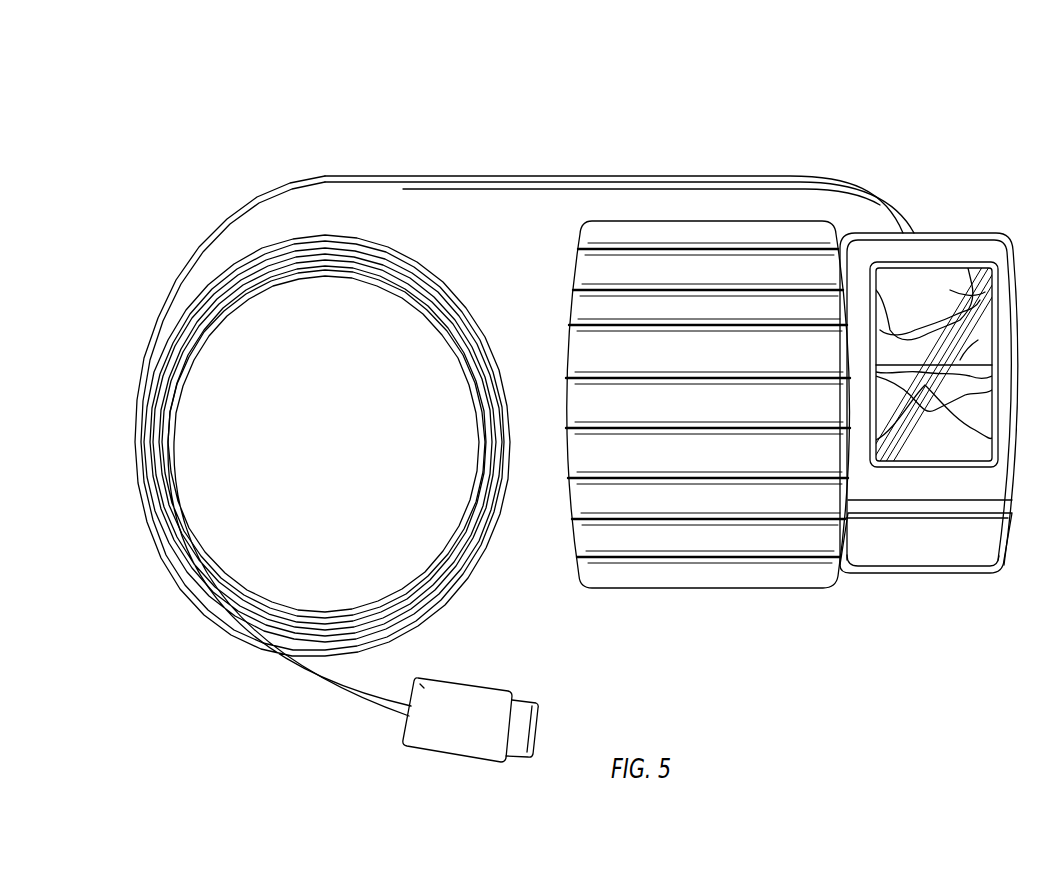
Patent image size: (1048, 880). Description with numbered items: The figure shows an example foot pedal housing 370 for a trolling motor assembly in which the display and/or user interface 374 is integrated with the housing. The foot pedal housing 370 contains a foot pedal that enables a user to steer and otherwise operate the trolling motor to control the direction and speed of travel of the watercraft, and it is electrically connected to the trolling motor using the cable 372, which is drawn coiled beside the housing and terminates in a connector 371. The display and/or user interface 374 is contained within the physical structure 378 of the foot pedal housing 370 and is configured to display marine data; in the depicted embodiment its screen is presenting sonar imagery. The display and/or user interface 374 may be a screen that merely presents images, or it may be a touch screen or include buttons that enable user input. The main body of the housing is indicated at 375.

The foot pedal housing 370 is at (576, 415).
The connector plug 371 is at (480, 736).
The cable 372 is at (316, 184).
The display and/or user interface 374 is at (945, 259).
The main body housing 375 is at (668, 241).
The physical structure 378 is at (888, 552).